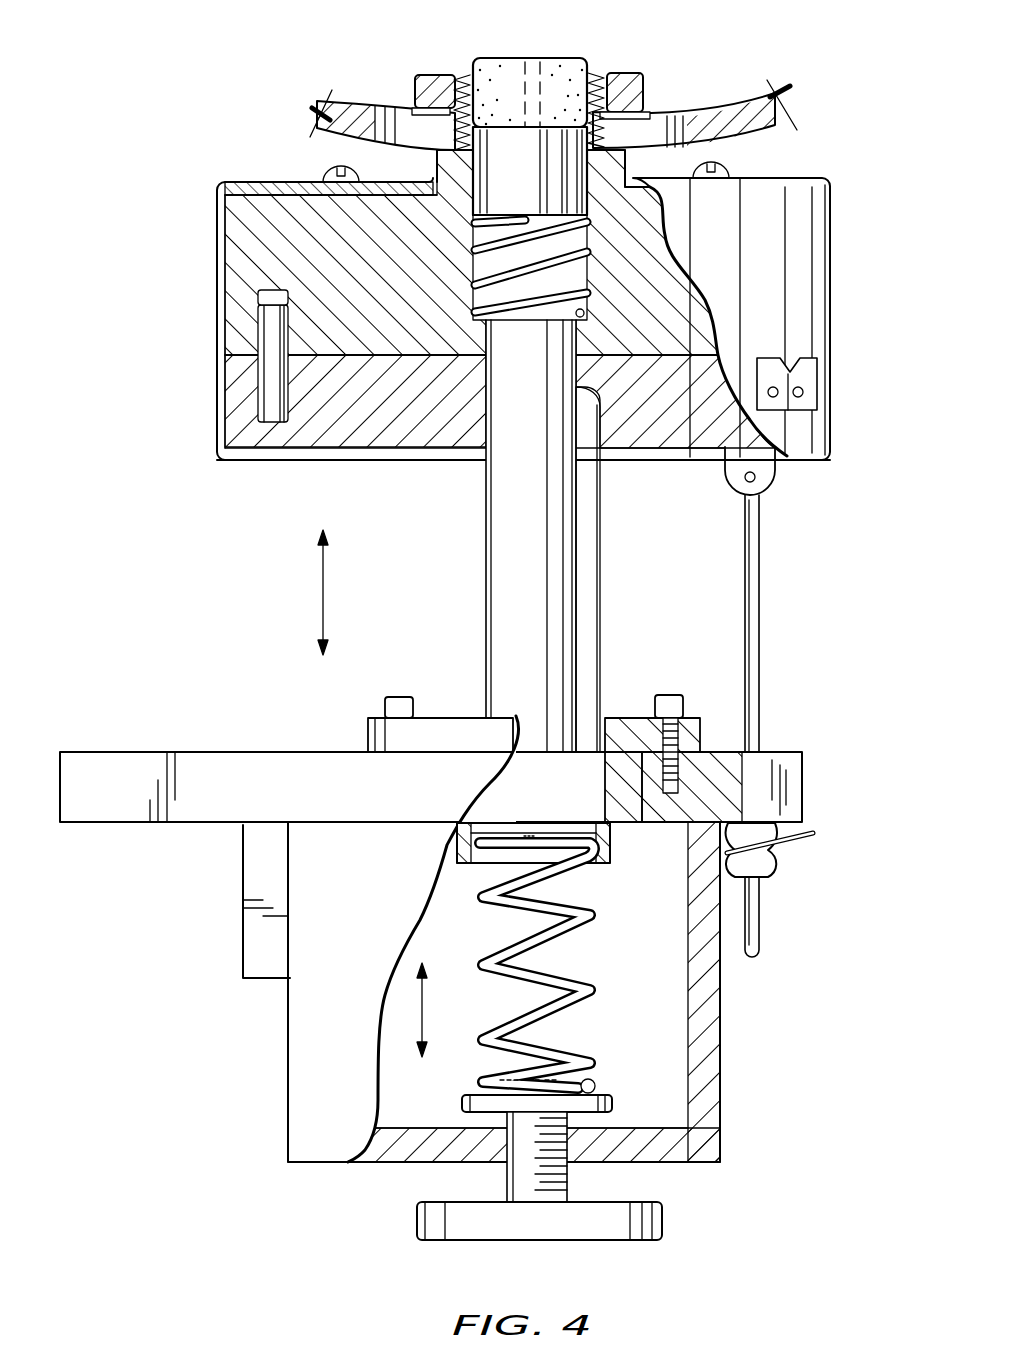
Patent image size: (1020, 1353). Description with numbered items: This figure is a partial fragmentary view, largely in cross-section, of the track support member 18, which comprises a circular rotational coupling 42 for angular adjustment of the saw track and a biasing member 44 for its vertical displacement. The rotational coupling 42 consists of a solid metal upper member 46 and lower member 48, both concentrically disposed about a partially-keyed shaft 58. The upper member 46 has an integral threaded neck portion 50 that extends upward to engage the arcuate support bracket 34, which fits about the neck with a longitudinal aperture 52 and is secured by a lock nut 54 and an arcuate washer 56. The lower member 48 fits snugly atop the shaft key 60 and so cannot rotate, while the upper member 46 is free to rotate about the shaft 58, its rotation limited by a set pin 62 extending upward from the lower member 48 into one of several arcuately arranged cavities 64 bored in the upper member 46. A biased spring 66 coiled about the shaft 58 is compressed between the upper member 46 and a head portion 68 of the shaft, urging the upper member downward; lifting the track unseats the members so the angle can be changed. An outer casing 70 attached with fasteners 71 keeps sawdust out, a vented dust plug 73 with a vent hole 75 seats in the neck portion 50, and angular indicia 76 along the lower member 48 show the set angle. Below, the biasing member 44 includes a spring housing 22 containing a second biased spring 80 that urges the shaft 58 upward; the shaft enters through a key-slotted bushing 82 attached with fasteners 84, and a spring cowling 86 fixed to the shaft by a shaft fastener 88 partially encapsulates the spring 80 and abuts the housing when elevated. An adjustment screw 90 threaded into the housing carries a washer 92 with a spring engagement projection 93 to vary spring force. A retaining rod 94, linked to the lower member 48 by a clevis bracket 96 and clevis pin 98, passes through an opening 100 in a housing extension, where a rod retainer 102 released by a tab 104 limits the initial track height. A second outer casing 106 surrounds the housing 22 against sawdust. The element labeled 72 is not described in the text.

The track support member 18 is at (145, 585).
The spring housing 22 is at (720, 1060).
The arcuate support bracket 34 is at (355, 100).
The rotational coupling 42 is at (175, 462).
The biasing member 44 is at (792, 985).
The upper member 46 is at (218, 205).
The lower member 48 is at (360, 447).
The threaded neck portion 50 is at (606, 80).
The longitudinal aperture 52 is at (410, 135).
The lock nut 54 is at (432, 75).
The arcuate washer 56 is at (640, 115).
The partially-keyed shaft 58 is at (488, 552).
The shaft key 60 is at (600, 578).
The set pin 62 is at (262, 345).
The cavities 64 is at (258, 297).
The biased spring 66 is at (526, 308).
The head portion 68 is at (472, 205).
The outer casing 70 is at (228, 378).
The fasteners 71 is at (330, 172).
The side block 72 is at (805, 358).
The vented dust plug 73 is at (557, 58).
The vent hole 75 is at (522, 80).
The angular indicia 76 is at (810, 395).
The second biased spring 80 is at (592, 992).
The key-slotted bushing 82 is at (625, 718).
The fasteners 84 is at (405, 697).
The spring cowling 86 is at (606, 855).
The shaft fastener 88 is at (530, 835).
The adjustment screw 90 is at (605, 1243).
The washer 92 is at (612, 1100).
The spring engagement projection 93 is at (580, 1082).
The retaining rod 94 is at (762, 612).
The clevis bracket 96 is at (735, 490).
The clevis pin 98 is at (760, 480).
The opening 100 is at (790, 752).
The rod retainer 102 is at (775, 860).
The tab 104 is at (805, 838).
The second outer casing 106 is at (302, 1098).